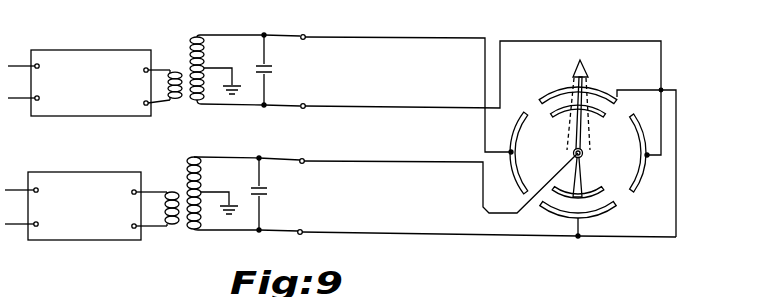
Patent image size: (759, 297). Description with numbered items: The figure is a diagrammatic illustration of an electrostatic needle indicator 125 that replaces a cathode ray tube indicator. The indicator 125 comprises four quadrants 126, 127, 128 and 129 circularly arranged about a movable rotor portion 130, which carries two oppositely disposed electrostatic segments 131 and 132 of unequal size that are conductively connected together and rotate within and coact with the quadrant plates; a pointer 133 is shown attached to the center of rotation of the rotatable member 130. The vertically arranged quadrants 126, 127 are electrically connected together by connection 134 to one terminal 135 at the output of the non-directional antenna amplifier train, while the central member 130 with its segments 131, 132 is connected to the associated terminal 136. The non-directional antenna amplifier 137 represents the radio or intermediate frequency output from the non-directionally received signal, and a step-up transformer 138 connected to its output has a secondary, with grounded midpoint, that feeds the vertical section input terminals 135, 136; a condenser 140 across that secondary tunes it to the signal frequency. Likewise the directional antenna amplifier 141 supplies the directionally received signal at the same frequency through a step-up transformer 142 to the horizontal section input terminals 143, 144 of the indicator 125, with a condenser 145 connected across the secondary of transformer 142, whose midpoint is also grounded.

The needle indicator 125 is at (532, 92).
The quadrant 126 is at (561, 85).
The quadrant 127 is at (603, 211).
The quadrant 128 is at (523, 178).
The quadrant 129 is at (636, 120).
The rotor portion 130 is at (584, 173).
The electrostatic segment 131 is at (556, 116).
The electrostatic segment 132 is at (598, 191).
The pointer 133 is at (589, 72).
The connection 134 is at (677, 142).
The terminal 135 is at (303, 232).
The terminal 136 is at (305, 160).
The non-directional antenna amplifier 137 is at (139, 174).
The step-up transformer 138 is at (186, 223).
The condenser 140 is at (267, 194).
The directional antenna amplifier 141 is at (135, 55).
The step-up transformer 142 is at (187, 101).
The terminal 143 is at (306, 37).
The terminal 144 is at (306, 107).
The condenser 145 is at (271, 69).